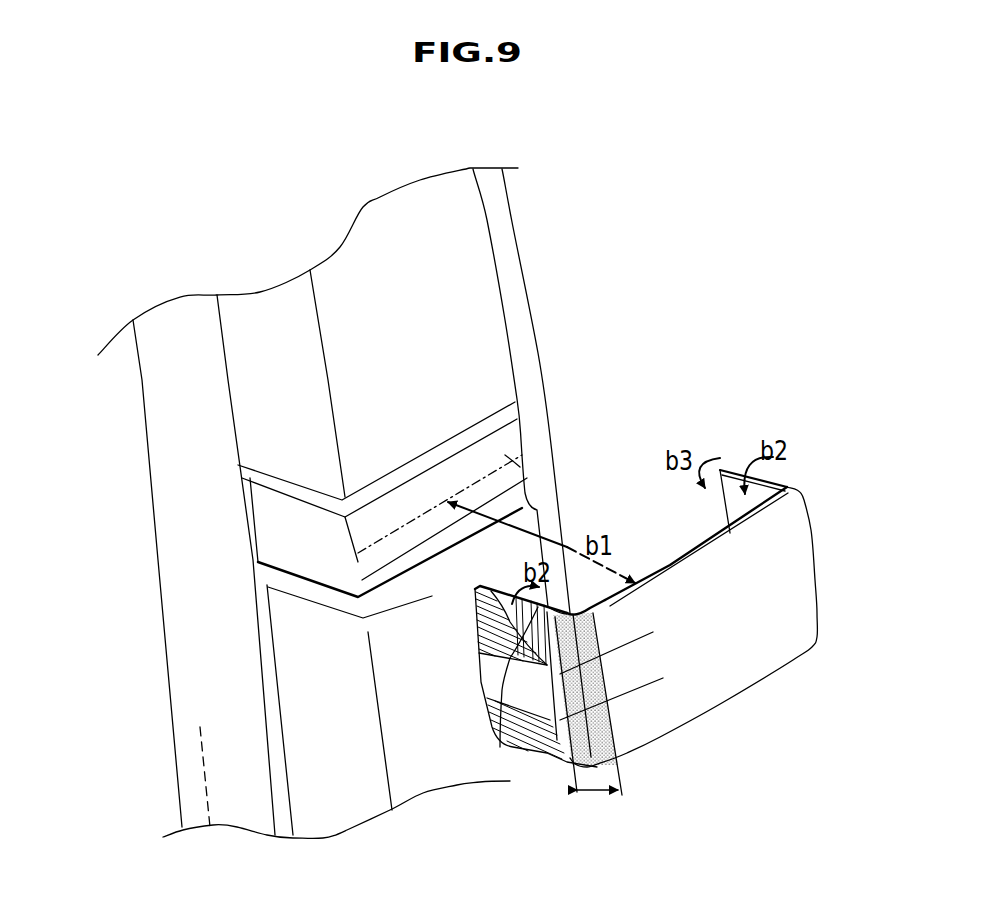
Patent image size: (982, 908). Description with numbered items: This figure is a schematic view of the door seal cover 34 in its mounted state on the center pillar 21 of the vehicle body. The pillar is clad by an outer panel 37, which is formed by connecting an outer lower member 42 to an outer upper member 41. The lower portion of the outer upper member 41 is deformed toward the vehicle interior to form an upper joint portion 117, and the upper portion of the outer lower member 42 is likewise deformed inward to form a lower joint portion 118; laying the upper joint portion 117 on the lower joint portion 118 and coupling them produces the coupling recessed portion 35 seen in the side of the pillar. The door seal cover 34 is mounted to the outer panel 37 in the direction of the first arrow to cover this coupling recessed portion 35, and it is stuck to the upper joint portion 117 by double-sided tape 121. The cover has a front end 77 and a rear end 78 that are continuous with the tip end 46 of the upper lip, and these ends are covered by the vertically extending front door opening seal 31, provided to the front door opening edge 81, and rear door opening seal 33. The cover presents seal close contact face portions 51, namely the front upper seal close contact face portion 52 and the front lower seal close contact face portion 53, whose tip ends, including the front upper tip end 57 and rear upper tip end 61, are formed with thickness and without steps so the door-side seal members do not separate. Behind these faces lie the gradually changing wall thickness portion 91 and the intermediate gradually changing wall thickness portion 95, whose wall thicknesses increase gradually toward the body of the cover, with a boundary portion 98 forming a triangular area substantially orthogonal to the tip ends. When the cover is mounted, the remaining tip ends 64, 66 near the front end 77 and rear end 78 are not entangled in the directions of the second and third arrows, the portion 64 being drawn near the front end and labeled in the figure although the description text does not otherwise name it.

The center pillar 21 is at (188, 218).
The front door opening seal 31 is at (162, 620).
The rear door opening seal 33 is at (539, 353).
The door seal cover 34 is at (736, 446).
The coupling recessed portion 35 is at (290, 461).
The outer panel 37 is at (363, 207).
The outer upper member 41 is at (483, 270).
The outer lower member 42 is at (423, 793).
The tip end of upper lip 46 is at (683, 557).
The seal close contact face portion 51 is at (597, 793).
The front upper seal close contact face portion 52 is at (578, 592).
The front lower seal close contact face portion 53 is at (577, 773).
The front upper tip end 57 is at (566, 603).
The rear upper tip end 61 is at (780, 480).
The bent flange 64 is at (500, 600).
The remaining tip end 66 is at (737, 470).
The front end 77 is at (490, 677).
The rear end 78 is at (730, 497).
The front door opening edge 81 is at (202, 743).
The gradually changing wall thickness portion 91 is at (535, 753).
The intermediate gradually changing wall thickness portion 95 is at (483, 640).
The boundary portion 98 is at (505, 745).
The upper joint portion 117 is at (405, 510).
The lower joint portion 118 is at (423, 573).
The double-sided tape 121 is at (505, 455).